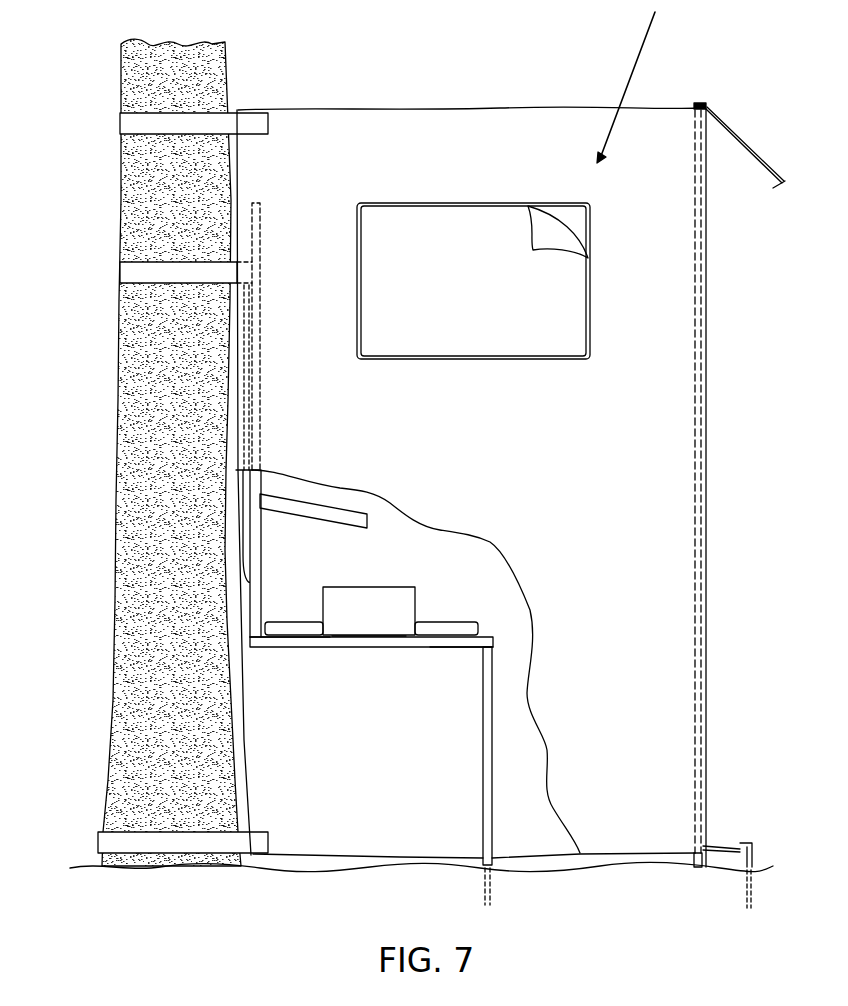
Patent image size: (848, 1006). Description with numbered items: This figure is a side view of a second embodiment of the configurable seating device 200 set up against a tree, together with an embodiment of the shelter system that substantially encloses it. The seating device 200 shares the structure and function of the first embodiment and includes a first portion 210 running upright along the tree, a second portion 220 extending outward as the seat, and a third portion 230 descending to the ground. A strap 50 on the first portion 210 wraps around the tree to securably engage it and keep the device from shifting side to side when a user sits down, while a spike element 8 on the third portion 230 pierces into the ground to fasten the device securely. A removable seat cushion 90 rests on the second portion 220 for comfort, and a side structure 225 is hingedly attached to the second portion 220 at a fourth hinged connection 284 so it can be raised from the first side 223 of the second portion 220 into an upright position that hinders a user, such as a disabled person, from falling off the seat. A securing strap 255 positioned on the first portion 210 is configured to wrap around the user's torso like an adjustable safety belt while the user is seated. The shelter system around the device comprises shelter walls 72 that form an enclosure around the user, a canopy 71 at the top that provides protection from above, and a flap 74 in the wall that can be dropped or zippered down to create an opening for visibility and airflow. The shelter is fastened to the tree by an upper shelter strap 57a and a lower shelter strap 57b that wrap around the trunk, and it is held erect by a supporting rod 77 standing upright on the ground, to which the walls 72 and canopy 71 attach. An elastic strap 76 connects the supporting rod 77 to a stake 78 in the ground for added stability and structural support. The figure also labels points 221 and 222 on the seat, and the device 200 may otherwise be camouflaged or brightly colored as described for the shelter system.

The seating device 200 is at (200, 530).
The shelter strap 57a is at (145, 126).
The strap 50 is at (152, 272).
The shelter strap 57b is at (138, 842).
The shelter walls 72 is at (663, 575).
The canopy 71 is at (510, 108).
The supporting rod 77 is at (698, 103).
The elastic strap 76 is at (745, 143).
The flap 74 is at (510, 309).
The first portion 210 is at (258, 233).
The second portion 220 is at (452, 647).
The platform inner end 221 is at (273, 660).
The platform outer end 222 is at (465, 659).
The third portion 230 is at (488, 773).
The removable seat cushion 90 is at (300, 628).
The first side 223 is at (480, 622).
The side structure 225 is at (377, 608).
The fourth hinged connection 284 is at (390, 636).
The securing strap 255 is at (312, 511).
The spike element 8 is at (492, 890).
The stake 78 is at (750, 887).